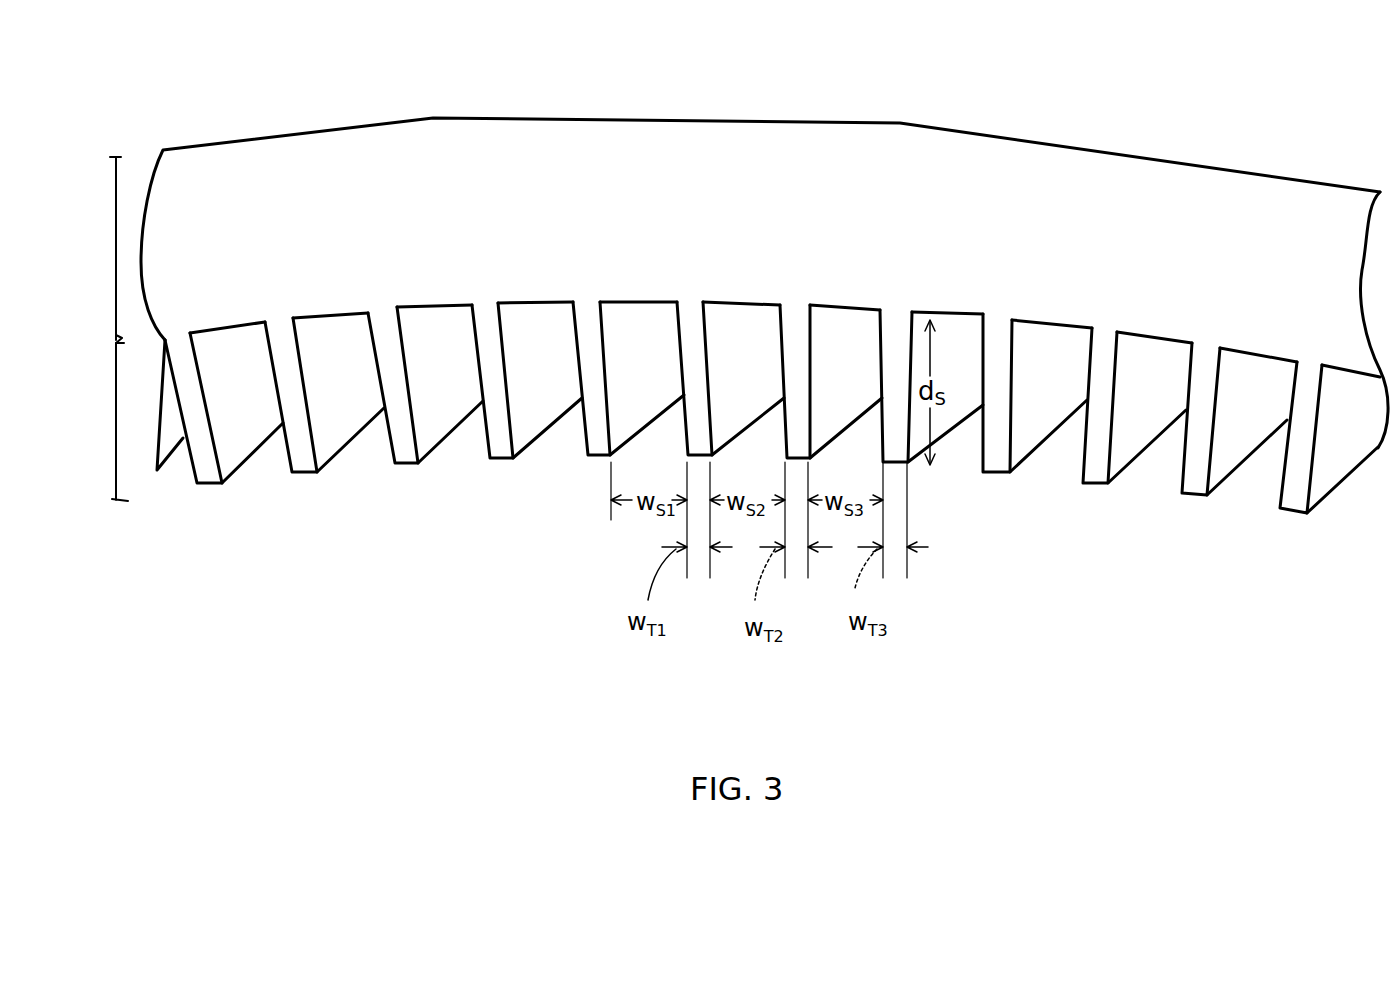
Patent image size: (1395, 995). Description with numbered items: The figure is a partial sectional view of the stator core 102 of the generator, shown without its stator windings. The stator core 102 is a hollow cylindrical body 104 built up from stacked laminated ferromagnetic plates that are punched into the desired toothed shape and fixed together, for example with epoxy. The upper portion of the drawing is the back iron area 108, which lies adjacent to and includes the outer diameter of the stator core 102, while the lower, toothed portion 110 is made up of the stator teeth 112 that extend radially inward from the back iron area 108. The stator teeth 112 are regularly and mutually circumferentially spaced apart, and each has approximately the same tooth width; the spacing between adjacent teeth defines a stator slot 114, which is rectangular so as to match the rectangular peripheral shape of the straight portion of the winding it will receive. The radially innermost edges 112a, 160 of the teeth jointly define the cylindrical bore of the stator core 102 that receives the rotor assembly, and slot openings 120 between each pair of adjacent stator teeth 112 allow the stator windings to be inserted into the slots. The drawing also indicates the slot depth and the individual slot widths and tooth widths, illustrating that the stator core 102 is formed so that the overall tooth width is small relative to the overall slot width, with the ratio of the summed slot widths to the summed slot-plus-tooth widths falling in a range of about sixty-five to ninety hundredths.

The stator core 102 is at (703, 101).
The hollow cylindrical body 104 is at (788, 233).
The back iron area 108 is at (117, 245).
The tooth portion 110 is at (117, 412).
The stator teeth 112 is at (302, 471).
The radially innermost edges 112a is at (993, 474).
The stator slots 114 is at (361, 403).
The slot openings 120 is at (552, 458).
The tooth 160 is at (1063, 426).